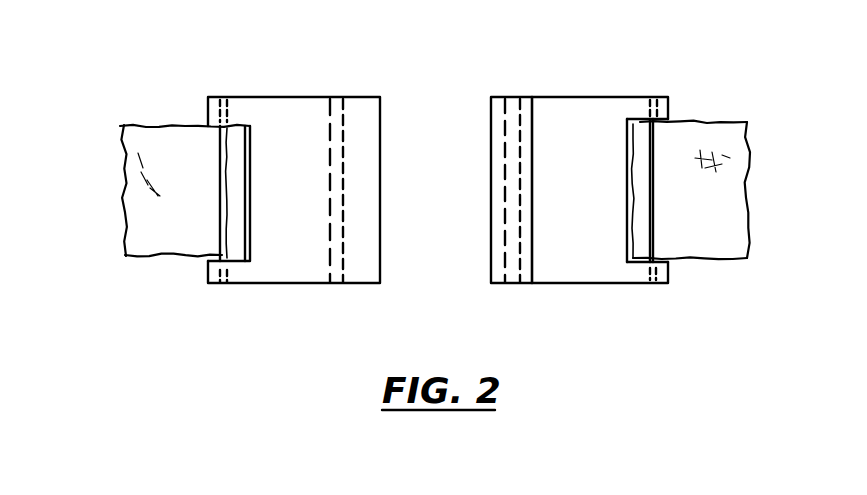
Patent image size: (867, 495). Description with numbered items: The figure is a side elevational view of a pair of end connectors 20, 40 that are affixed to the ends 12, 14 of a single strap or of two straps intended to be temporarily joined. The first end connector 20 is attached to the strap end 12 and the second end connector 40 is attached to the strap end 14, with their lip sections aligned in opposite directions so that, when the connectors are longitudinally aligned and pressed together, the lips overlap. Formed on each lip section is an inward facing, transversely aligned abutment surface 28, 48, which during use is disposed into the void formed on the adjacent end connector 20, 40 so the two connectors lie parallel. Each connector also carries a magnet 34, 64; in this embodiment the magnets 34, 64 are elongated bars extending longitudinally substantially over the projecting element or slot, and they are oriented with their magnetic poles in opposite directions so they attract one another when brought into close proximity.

The first end connector 20 is at (270, 59).
The strap end 12 is at (128, 127).
The magnet 34 is at (340, 99).
The abutment surface 28 is at (343, 272).
The second end connector 40 is at (630, 58).
The magnet 64 is at (517, 98).
The abutment surface 48 is at (537, 260).
The strap end 14 is at (722, 124).